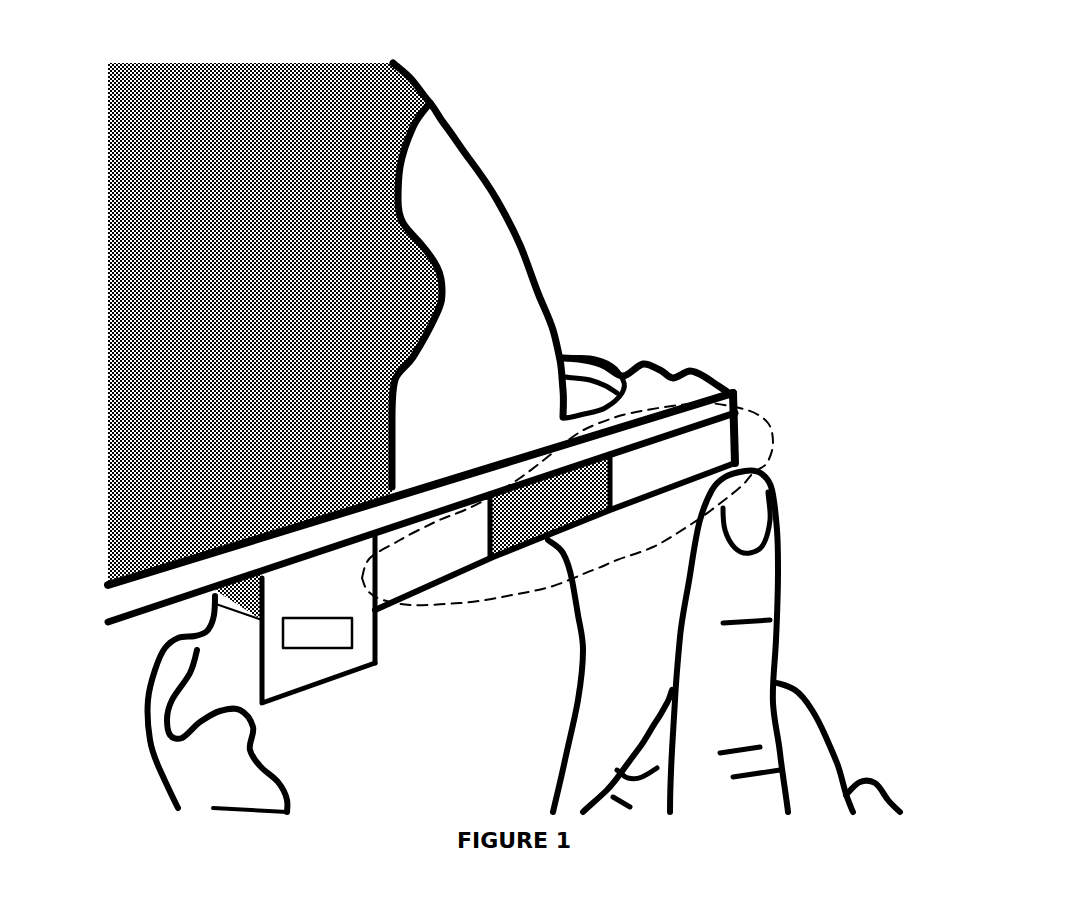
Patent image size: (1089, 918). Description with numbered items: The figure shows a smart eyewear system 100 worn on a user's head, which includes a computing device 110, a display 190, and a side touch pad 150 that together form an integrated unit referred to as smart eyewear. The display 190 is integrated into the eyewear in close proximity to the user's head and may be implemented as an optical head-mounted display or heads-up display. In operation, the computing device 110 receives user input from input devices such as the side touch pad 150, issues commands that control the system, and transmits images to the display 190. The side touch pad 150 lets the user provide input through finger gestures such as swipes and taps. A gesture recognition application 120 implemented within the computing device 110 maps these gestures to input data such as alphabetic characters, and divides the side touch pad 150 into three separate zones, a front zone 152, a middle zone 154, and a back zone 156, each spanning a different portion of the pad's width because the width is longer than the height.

The smart eyewear system 100 is at (968, 47).
The computing device 110 is at (375, 680).
The gesture recognition application 120 is at (333, 648).
The side touch pad 150 is at (637, 505).
The front zone 152 is at (657, 476).
The middle zone 154 is at (542, 523).
The back zone 156 is at (421, 599).
The display 190 is at (600, 358).